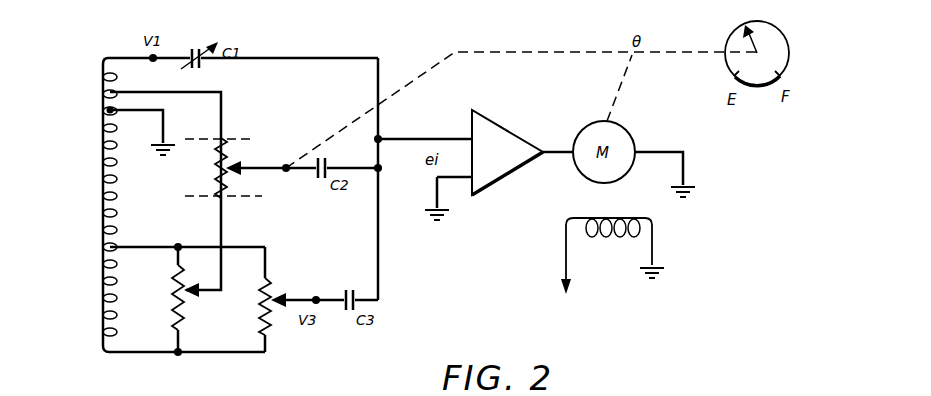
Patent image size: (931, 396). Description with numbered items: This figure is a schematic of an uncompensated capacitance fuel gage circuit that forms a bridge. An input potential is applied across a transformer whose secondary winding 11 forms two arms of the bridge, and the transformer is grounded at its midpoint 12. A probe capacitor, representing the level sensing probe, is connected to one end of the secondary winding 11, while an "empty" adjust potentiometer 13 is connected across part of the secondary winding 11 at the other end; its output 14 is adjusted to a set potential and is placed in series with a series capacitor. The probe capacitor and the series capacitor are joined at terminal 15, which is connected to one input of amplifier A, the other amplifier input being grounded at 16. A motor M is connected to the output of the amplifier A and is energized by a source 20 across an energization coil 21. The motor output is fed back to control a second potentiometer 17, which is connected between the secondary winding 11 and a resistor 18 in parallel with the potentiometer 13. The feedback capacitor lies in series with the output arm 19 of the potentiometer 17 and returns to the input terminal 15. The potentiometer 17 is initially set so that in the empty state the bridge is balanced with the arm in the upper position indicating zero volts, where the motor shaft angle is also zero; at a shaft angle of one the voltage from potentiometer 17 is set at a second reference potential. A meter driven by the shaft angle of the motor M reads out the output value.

The secondary winding 11 is at (103, 198).
The midpoint 12 is at (160, 115).
The potentiometer 13 is at (268, 340).
The output 14 is at (316, 297).
The terminal 15 is at (379, 138).
The ground 16 is at (440, 200).
The second potentiometer 17 is at (222, 138).
The resistor 18 is at (180, 332).
The output arm 19 is at (290, 172).
The source 20 is at (556, 289).
The energization coil 21 is at (654, 228).